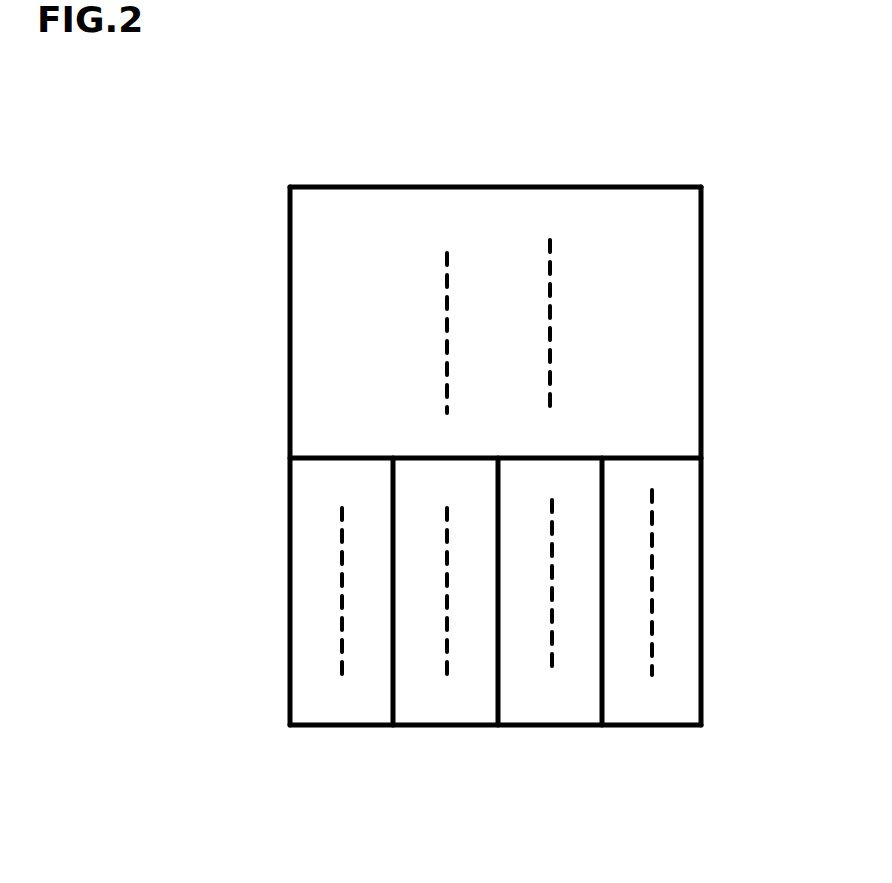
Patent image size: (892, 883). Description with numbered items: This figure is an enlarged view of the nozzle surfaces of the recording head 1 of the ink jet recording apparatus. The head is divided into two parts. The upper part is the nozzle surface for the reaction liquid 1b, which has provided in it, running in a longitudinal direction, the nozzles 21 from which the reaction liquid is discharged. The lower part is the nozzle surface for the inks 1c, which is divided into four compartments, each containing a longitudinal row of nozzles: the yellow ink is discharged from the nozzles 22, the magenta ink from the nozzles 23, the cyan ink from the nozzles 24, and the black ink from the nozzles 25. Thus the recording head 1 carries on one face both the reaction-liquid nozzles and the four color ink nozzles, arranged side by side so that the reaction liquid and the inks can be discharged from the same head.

The recording head 1 is at (704, 497).
The nozzle surface for the reaction liquid 1b is at (338, 340).
The nozzle surface for the inks 1c is at (330, 588).
The nozzles for the reaction liquid 21 is at (450, 277).
The yellow ink nozzles 22 is at (342, 627).
The magenta ink nozzles 23 is at (447, 640).
The cyan ink nozzles 24 is at (550, 627).
The black ink nozzles 25 is at (652, 627).